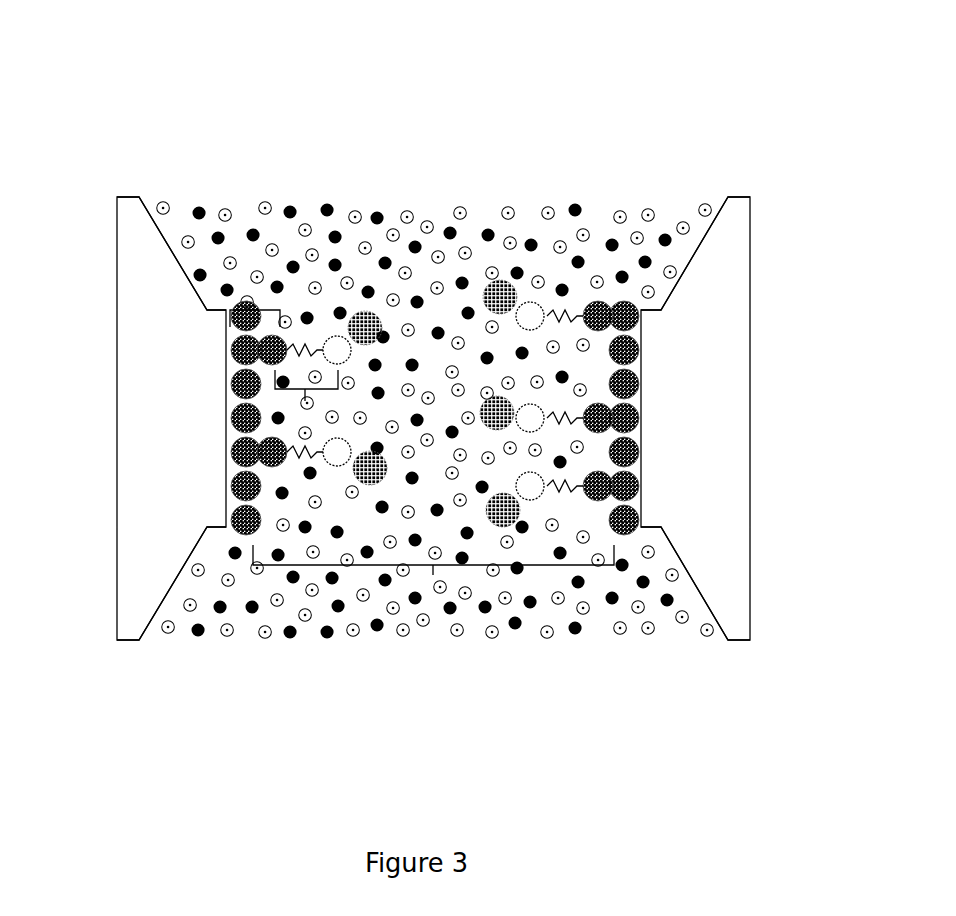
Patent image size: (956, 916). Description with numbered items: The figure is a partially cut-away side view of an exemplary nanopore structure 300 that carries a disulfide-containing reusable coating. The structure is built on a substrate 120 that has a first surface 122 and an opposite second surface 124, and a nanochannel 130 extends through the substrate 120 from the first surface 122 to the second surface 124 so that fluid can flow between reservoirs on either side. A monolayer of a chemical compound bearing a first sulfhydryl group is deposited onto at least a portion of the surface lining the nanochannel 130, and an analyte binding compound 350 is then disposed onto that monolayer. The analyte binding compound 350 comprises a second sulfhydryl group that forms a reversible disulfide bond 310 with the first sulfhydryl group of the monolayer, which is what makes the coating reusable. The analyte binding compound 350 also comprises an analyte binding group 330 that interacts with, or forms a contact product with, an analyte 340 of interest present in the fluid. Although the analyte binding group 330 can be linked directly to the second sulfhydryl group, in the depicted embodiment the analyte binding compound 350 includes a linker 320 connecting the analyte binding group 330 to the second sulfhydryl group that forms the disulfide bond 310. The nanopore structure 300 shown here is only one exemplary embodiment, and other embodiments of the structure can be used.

The nanopore structure 300 is at (463, 105).
The substrate 120 is at (117, 410).
The first surface 122 is at (137, 196).
The second surface 124 is at (135, 645).
The nanochannel 130 is at (433, 568).
The reversible disulfide bond 310 is at (260, 308).
The linker 320 is at (298, 340).
The analyte binding group 330 is at (533, 302).
The analyte 340 is at (500, 280).
The analyte binding compound 350 is at (307, 405).